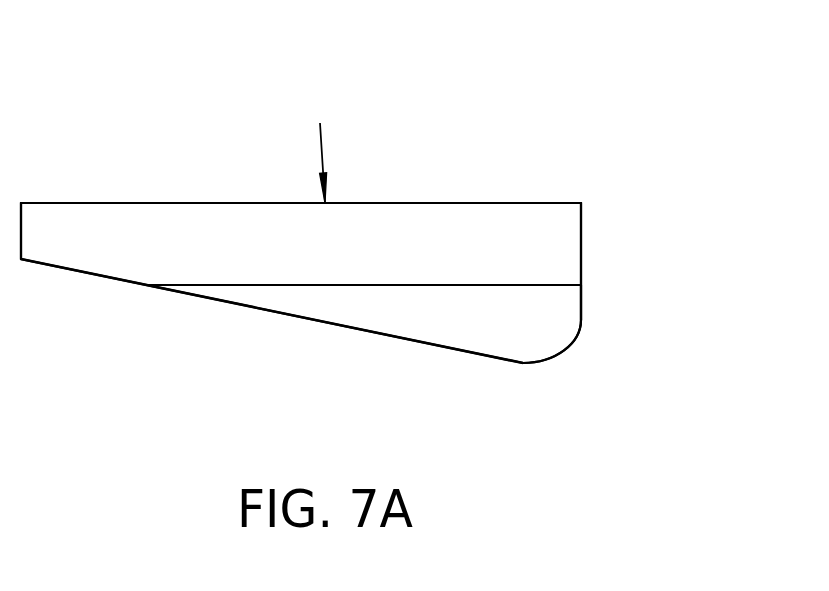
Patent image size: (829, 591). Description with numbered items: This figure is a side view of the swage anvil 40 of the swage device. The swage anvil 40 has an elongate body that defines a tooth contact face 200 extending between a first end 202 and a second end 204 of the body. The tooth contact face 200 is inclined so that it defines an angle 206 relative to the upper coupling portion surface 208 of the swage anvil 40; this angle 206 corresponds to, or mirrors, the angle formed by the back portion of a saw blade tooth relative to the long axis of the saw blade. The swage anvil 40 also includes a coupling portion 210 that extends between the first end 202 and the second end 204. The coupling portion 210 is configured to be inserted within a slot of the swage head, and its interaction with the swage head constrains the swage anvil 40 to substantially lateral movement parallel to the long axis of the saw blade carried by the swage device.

The swage anvil 40 is at (560, 72).
The tooth contact face 200 is at (310, 320).
The first end 202 is at (25, 197).
The second end 204 is at (567, 193).
The angle 206 is at (322, 140).
The upper coupling portion surface 208 is at (158, 202).
The coupling portion 210 is at (560, 245).